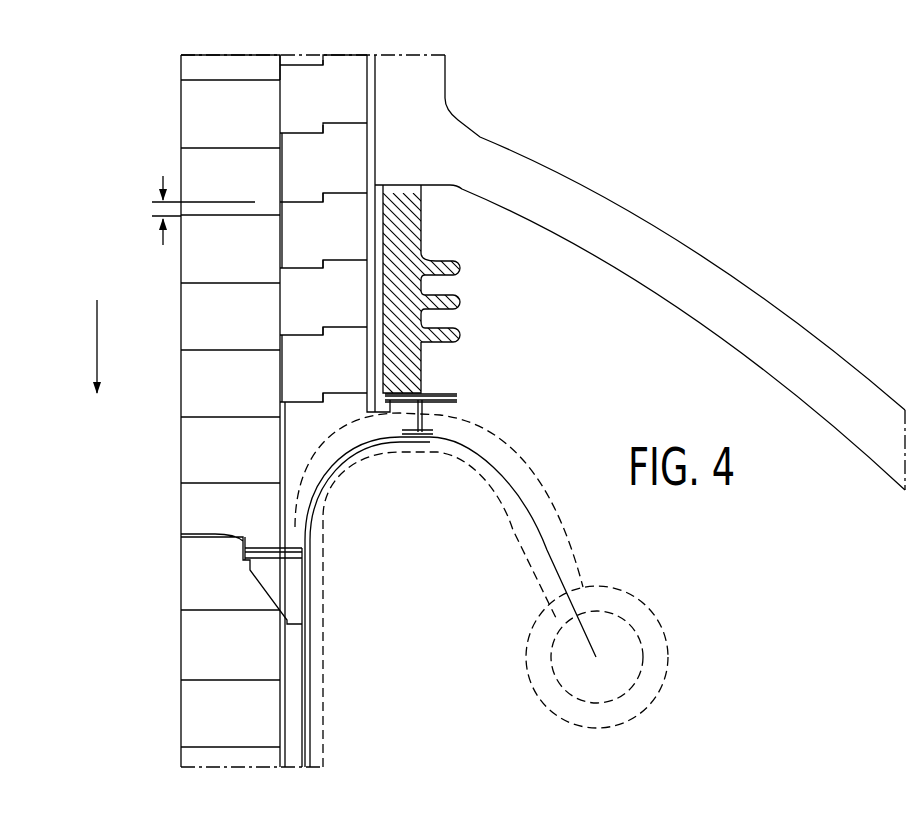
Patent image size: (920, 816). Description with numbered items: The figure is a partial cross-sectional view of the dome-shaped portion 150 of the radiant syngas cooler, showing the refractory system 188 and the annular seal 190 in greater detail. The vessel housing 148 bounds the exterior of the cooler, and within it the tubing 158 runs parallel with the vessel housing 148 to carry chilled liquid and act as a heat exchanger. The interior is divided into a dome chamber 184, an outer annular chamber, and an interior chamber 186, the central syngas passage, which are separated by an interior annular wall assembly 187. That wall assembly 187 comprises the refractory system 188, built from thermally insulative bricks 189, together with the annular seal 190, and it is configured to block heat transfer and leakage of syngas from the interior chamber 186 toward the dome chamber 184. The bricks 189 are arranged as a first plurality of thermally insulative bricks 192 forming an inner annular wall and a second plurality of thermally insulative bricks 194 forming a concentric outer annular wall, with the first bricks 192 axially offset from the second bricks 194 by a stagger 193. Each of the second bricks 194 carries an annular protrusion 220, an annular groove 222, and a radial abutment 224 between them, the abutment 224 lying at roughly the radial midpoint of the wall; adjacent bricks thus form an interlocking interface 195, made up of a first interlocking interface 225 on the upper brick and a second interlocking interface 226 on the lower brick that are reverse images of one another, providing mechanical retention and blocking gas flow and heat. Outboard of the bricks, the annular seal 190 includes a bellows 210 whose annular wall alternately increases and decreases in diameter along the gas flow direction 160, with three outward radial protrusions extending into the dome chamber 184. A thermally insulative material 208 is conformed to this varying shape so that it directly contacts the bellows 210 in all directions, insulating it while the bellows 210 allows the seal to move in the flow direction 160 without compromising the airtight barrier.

The vessel housing 148 is at (706, 253).
The dome-shaped portion 150 is at (612, 201).
The tubing 158 is at (292, 654).
The gas flow direction 160 is at (97, 342).
The dome chamber 184 is at (345, 681).
The interior chamber 186 is at (110, 688).
The interior annular wall assembly 187 is at (176, 44).
The refractory system 188 is at (343, 518).
The thermally insulative bricks 189 is at (256, 78).
The annular seal 190 is at (528, 318).
The first plurality of thermally insulative bricks 192 is at (190, 114).
The axial stagger 193 is at (163, 182).
The second plurality of thermally insulative bricks 194 is at (352, 94).
The interlocking interface 195 is at (312, 122).
The thermally insulative material 208 is at (402, 237).
The bellows 210 is at (470, 267).
The annular protrusion 220 is at (303, 342).
The annular groove 222 is at (324, 336).
The radial abutment 224 is at (346, 333).
The first interlocking interface 225 is at (343, 197).
The second interlocking interface 226 is at (303, 196).